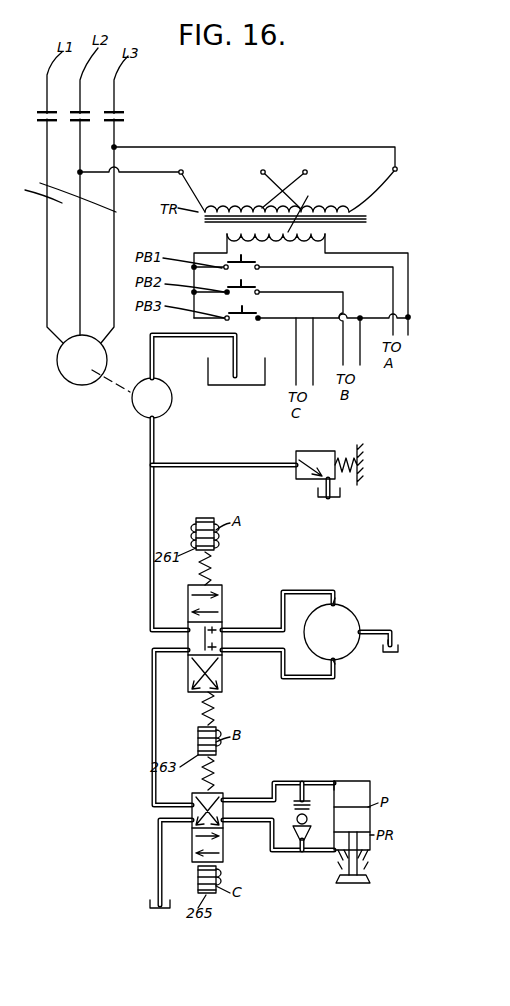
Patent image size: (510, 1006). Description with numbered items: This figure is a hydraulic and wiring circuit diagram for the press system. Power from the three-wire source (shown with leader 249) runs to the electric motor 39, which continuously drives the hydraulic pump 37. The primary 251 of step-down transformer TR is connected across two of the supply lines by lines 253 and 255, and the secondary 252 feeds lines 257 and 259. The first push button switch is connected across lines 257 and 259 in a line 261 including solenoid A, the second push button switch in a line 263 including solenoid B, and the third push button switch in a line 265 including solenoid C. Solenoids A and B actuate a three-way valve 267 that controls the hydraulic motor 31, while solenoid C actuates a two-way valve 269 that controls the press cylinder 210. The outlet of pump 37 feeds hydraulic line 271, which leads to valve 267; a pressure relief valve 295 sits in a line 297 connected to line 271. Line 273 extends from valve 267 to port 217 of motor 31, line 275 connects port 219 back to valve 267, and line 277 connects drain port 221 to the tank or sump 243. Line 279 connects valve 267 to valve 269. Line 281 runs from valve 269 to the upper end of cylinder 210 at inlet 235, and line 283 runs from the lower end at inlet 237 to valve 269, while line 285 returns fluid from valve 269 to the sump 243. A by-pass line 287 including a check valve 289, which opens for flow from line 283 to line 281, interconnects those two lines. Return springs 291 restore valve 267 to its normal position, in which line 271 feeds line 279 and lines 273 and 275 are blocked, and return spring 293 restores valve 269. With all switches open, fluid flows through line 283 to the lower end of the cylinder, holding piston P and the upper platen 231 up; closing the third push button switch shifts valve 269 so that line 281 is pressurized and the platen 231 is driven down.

The power supply lines 249 is at (62, 189).
The line 255 is at (228, 145).
The line 253 is at (158, 174).
The primary 251 is at (224, 202).
The secondary 252 is at (296, 201).
The line 257 is at (228, 240).
The line 259 is at (332, 243).
The line 261 is at (280, 268).
The line 263 is at (300, 293).
The line 265 is at (282, 318).
The electric motor 39 is at (62, 378).
The hydraulic pump 37 is at (136, 406).
The tank or sump 243 is at (208, 366).
The hydraulic line 271 is at (148, 522).
The line 297 is at (230, 462).
The pressure relief valve 295 is at (312, 450).
The line 279 is at (152, 718).
The line 273 is at (285, 590).
The line 275 is at (292, 682).
The port 217 is at (333, 600).
The port 219 is at (336, 658).
The drain port 221 is at (360, 626).
The line 277 is at (390, 630).
The hydraulic motor 31 is at (332, 632).
The three-way valve 267 is at (224, 604).
The valve return spring 291 is at (210, 570).
The return spring 293 is at (222, 782).
The two-way valve 269 is at (224, 845).
The line 281 is at (275, 781).
The line 283 is at (275, 855).
The line 285 is at (158, 862).
The by-pass line 287 is at (304, 796).
The check valve 289 is at (310, 822).
The inlet 237 is at (314, 840).
The hydraulic cylinder 210 is at (370, 786).
The inlet 235 is at (334, 782).
The upper platen 231 is at (364, 878).